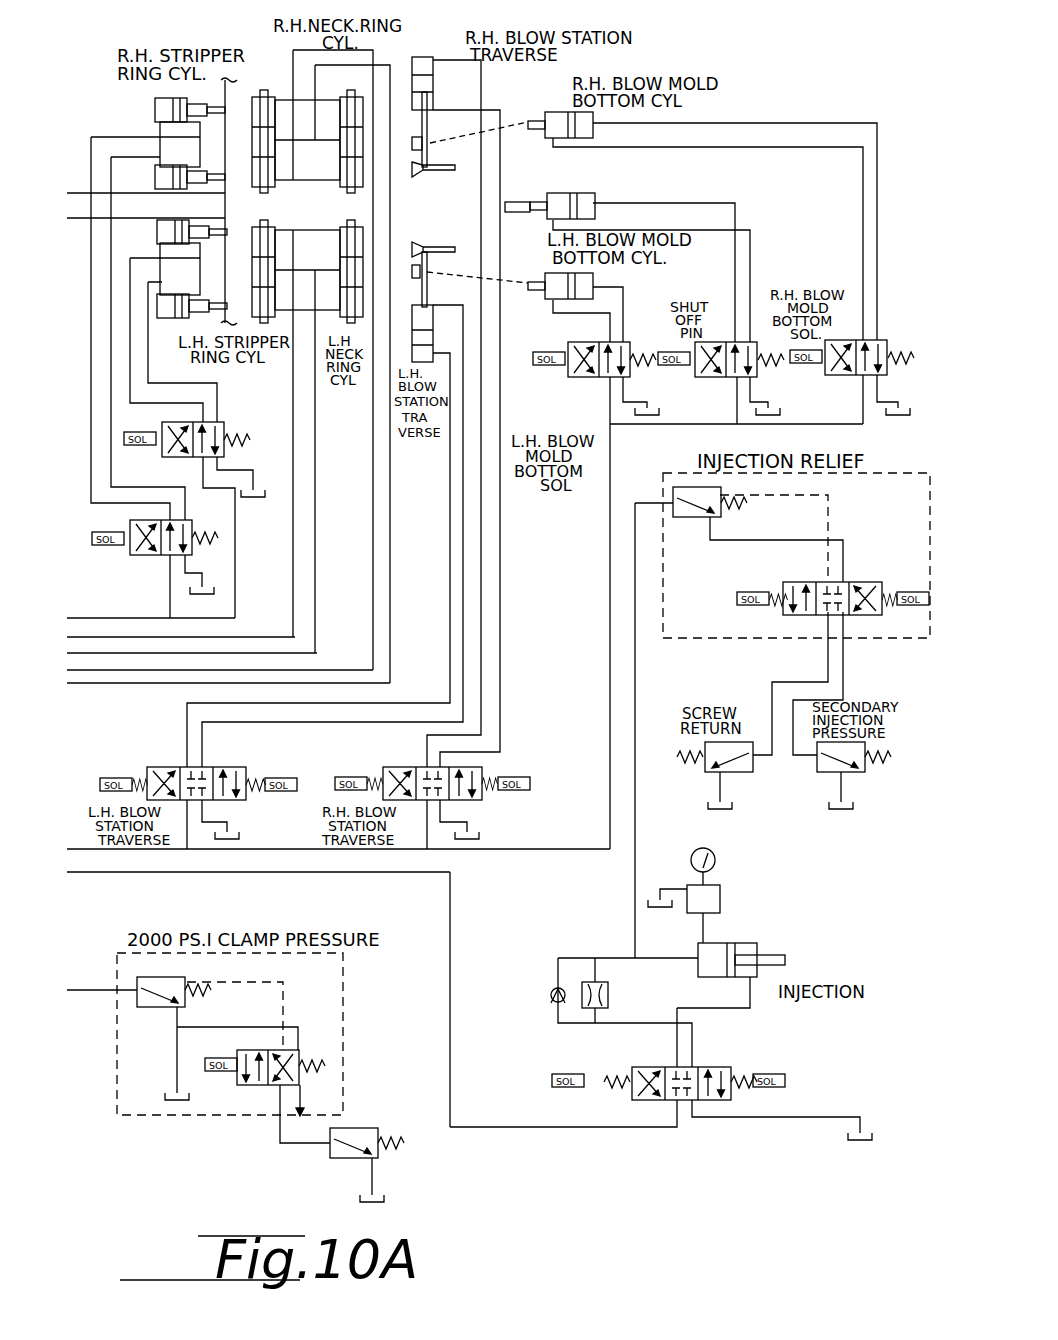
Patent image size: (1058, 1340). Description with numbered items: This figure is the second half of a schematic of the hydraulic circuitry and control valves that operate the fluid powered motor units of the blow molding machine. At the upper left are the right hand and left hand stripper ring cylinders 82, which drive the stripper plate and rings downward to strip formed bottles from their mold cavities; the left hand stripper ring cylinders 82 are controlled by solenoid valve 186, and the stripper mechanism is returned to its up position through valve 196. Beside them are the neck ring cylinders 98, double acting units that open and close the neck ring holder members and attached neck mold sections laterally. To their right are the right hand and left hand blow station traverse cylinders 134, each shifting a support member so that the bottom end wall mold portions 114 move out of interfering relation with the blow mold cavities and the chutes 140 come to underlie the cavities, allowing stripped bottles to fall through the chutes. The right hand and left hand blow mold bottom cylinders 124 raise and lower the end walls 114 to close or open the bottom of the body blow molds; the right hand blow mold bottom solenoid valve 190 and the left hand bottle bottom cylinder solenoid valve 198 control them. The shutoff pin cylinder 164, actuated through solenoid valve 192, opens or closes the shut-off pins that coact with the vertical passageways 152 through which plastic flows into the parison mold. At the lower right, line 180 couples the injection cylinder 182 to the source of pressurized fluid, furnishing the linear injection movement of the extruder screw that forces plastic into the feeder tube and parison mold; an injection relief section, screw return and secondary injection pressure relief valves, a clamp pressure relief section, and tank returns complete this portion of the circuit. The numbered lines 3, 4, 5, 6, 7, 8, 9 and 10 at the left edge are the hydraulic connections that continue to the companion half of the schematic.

The stripper ring cylinder 82 is at (155, 107).
The neck ring cylinder 98 is at (331, 224).
The blow station traverse cylinder 134 is at (423, 57).
The bottom end wall mold portion 114 is at (418, 140).
The chute 140 is at (433, 247).
The blow mold bottom cylinder 124 is at (593, 116).
The vertical passageway 152 is at (528, 200).
The shutoff pin cylinder 164 is at (593, 200).
The stripper ring solenoid valve 186 is at (212, 422).
The stripper return valve 196 is at (144, 556).
The bottle bottom cylinder solenoid valve 198 is at (592, 378).
The shutoff pin solenoid valve 192 is at (713, 378).
The right-hand blow mold bottom solenoid valve 190 is at (884, 341).
The injection cylinder 182 is at (744, 943).
The line 180 is at (452, 936).
The hydraulic line 3 is at (151, 608).
The hydraulic line 4 is at (181, 627).
The hydraulic line 5 is at (192, 644).
The hydraulic line 6 is at (220, 661).
The hydraulic line 7 is at (228, 675).
The hydraulic line 8 is at (338, 841).
The hydraulic line 9 is at (258, 864).
The hydraulic line 10 is at (101, 980).